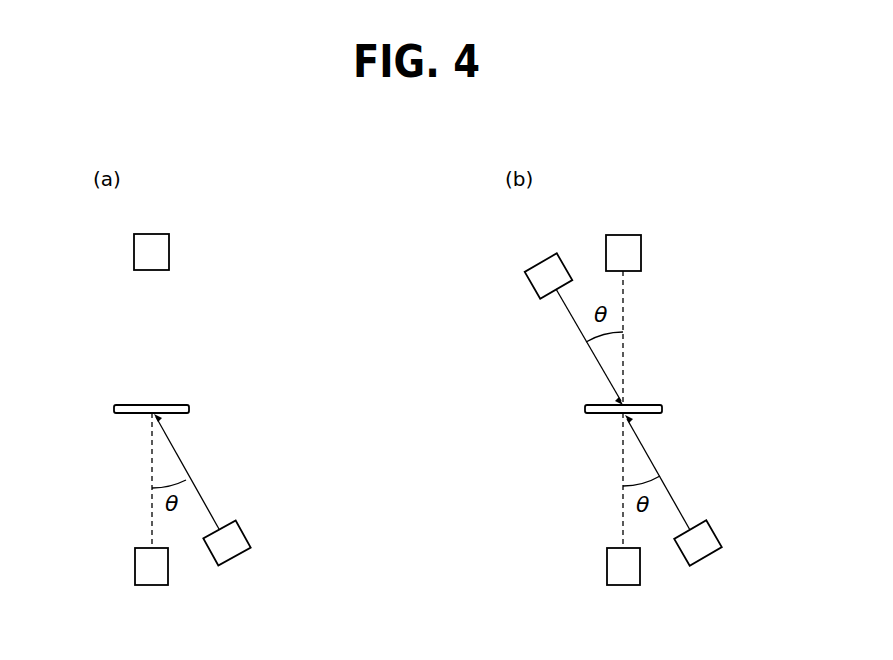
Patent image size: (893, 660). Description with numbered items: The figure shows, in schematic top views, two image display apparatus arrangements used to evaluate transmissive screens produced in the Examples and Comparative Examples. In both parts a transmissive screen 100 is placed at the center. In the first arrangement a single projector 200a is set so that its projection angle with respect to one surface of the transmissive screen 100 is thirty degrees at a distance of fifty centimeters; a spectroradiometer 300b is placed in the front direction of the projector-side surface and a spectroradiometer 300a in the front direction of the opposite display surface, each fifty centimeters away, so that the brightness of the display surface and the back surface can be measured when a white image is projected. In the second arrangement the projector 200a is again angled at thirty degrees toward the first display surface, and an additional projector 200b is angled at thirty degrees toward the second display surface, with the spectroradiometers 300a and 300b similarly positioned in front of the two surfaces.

The transmissive screen 100 is at (190, 410).
The projector 200a is at (240, 559).
The projector 200b is at (537, 259).
The spectroradiometer 300a is at (170, 250).
The spectroradiometer 300b is at (135, 573).